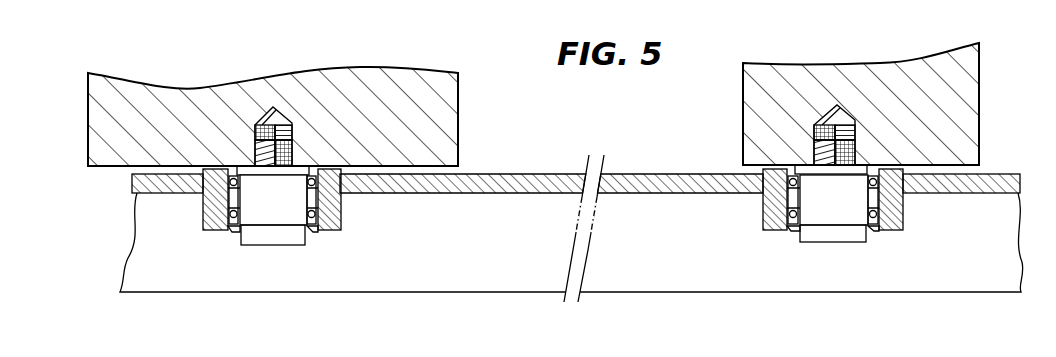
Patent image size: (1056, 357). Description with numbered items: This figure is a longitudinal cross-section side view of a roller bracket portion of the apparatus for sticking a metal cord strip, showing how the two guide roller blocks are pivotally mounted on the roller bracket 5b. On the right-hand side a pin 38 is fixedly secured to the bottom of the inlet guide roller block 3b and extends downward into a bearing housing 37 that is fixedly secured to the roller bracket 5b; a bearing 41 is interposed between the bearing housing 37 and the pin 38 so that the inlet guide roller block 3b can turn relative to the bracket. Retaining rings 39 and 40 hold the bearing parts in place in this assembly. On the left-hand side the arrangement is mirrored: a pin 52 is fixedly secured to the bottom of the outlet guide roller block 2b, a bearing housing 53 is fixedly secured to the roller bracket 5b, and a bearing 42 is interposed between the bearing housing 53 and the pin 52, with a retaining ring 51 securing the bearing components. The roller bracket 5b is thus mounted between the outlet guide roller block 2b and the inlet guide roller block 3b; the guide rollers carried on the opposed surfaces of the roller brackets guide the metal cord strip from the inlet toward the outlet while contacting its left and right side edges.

The outlet guide roller block 2b is at (458, 100).
The inlet guide roller block 3b is at (999, 64).
The roller bracket 5b is at (992, 175).
The bearing housing 37 is at (896, 229).
The pin 38 is at (855, 236).
The retaining ring 39 is at (795, 226).
The retaining ring 40 is at (227, 228).
The bearing 41 is at (785, 225).
The bearing 42 is at (340, 204).
The retaining ring 51 is at (237, 228).
The pin 52 is at (292, 236).
The bearing housing 53 is at (343, 229).